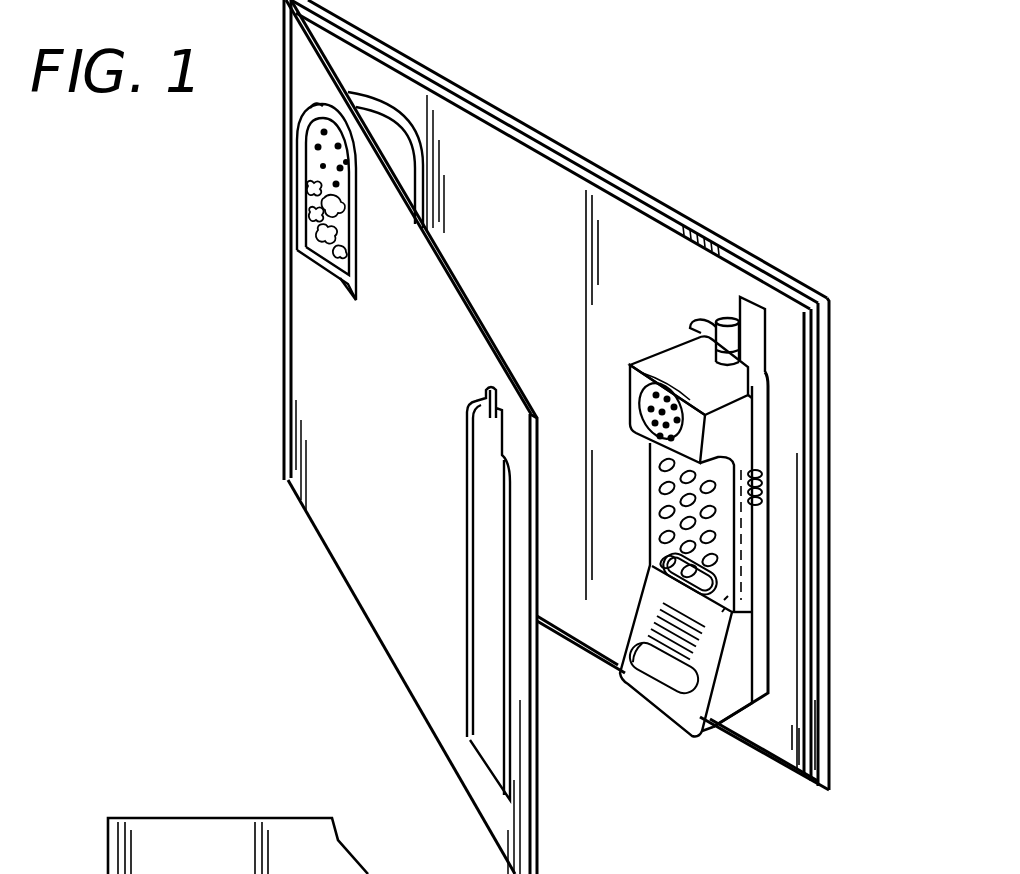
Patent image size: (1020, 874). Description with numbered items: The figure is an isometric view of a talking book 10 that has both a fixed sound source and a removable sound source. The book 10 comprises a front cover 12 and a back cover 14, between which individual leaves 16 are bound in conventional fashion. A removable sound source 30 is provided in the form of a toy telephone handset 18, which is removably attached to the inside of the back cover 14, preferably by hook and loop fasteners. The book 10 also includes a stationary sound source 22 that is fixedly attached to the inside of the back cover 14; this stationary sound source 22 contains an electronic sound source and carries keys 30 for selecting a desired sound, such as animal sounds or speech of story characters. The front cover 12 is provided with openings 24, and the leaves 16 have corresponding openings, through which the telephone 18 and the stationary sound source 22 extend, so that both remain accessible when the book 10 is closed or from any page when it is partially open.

The talking book 10 is at (541, 106).
The front cover 12 is at (337, 533).
The back cover 14 is at (829, 329).
The leaves 16 is at (789, 733).
The toy telephone handset 18 is at (714, 713).
The stationary sound source 22 is at (414, 178).
The openings 24 is at (500, 743).
The removable sound source 30 is at (309, 215).